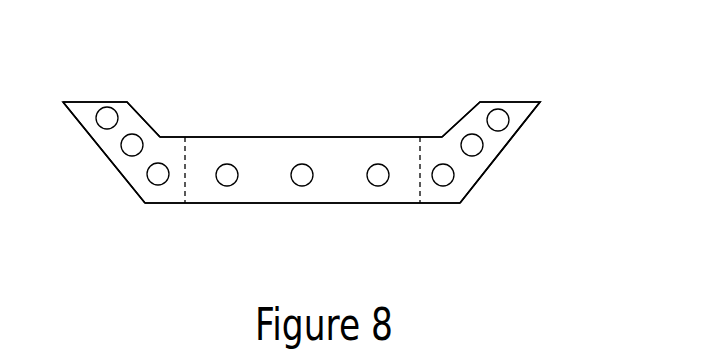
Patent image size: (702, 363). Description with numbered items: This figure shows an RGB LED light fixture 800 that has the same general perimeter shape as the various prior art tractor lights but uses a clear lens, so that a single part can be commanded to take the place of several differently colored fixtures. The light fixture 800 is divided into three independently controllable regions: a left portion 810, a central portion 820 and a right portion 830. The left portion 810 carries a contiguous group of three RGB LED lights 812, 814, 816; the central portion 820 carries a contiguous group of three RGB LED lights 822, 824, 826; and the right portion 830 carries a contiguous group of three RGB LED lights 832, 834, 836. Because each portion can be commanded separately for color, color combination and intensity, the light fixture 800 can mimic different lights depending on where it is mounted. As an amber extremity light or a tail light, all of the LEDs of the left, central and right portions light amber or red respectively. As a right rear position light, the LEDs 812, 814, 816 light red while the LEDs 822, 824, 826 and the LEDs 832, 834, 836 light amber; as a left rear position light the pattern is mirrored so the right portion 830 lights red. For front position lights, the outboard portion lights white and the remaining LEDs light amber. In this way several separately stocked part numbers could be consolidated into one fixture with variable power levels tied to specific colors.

The light fixture 800 is at (338, 85).
The left portion 810 is at (97, 148).
The RGB LED light 812 is at (116, 111).
The RGB LED light 814 is at (141, 139).
The RGB LED light 816 is at (148, 178).
The central portion 820 is at (290, 205).
The RGB LED light 822 is at (229, 186).
The RGB LED light 824 is at (302, 164).
The RGB LED light 826 is at (380, 186).
The right portion 830 is at (513, 137).
The RGB LED light 832 is at (454, 178).
The RGB LED light 834 is at (463, 139).
The RGB LED light 836 is at (490, 113).